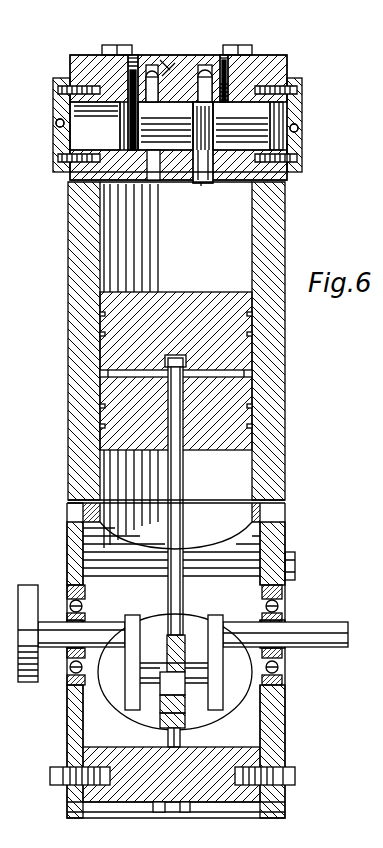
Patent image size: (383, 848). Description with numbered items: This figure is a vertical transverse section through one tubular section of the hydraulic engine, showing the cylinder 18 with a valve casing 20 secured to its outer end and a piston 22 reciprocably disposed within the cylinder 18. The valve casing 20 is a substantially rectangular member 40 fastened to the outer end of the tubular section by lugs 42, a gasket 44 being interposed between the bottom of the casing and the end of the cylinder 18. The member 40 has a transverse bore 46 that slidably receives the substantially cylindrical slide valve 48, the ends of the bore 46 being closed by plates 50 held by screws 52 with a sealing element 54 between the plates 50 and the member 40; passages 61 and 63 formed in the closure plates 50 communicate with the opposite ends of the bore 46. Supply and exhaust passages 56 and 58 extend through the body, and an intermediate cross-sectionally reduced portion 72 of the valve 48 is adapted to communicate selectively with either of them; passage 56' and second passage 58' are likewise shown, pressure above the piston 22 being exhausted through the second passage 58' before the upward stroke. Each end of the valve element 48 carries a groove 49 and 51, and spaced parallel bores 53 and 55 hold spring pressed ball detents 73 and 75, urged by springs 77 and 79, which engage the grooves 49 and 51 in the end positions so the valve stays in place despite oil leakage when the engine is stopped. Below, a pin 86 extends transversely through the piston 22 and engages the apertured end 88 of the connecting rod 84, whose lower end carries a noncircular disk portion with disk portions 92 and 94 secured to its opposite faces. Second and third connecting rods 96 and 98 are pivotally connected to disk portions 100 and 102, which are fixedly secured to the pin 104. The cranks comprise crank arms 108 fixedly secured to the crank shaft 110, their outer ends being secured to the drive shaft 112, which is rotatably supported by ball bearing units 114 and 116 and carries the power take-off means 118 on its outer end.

The cylinder portion 18 is at (291, 238).
The valve casing 20 is at (60, 69).
The piston 22 is at (195, 292).
The rectangular member 40 is at (287, 66).
The lugs 42 is at (100, 48).
The gasket 44 is at (287, 180).
The transverse bore 46 is at (90, 138).
The slide valve 48 is at (282, 130).
The groove 49 is at (144, 115).
The closure plate 50 is at (55, 100).
The groove 51 is at (268, 123).
The screws 52 is at (58, 90).
The bore 53 is at (137, 60).
The sealing element 54 is at (295, 146).
The bore 55 is at (224, 62).
The supply passage 56 is at (161, 67).
The pin passage 56' is at (176, 65).
The exhaust passage 58 is at (202, 68).
The second passage 58' is at (188, 202).
The passage in closure plate 61 is at (56, 123).
The passage in closure plate 63 is at (299, 128).
The cross-sectionally reduced portion 72 is at (201, 160).
The ball detent 73 is at (118, 108).
The ball detent 75 is at (226, 96).
The spring 77 is at (128, 84).
The spring 79 is at (228, 85).
The connecting rod 84 is at (183, 478).
The pin 86 is at (209, 378).
The apertured end 88 is at (188, 355).
The disk portion 92 is at (160, 668).
The disk portion 94 is at (185, 655).
The second connecting rod 96 is at (172, 779).
The third connecting rod 98 is at (182, 741).
The disk portion 100 is at (228, 724).
The disk portion 102 is at (160, 708).
The pin 104 is at (160, 722).
The crank arms 108 is at (133, 624).
The crank shaft 110 is at (140, 690).
The drive shaft 112 is at (100, 630).
The ball bearing unit 114 is at (286, 592).
The ball bearing unit 116 is at (84, 598).
The power take-off means 118 is at (28, 680).